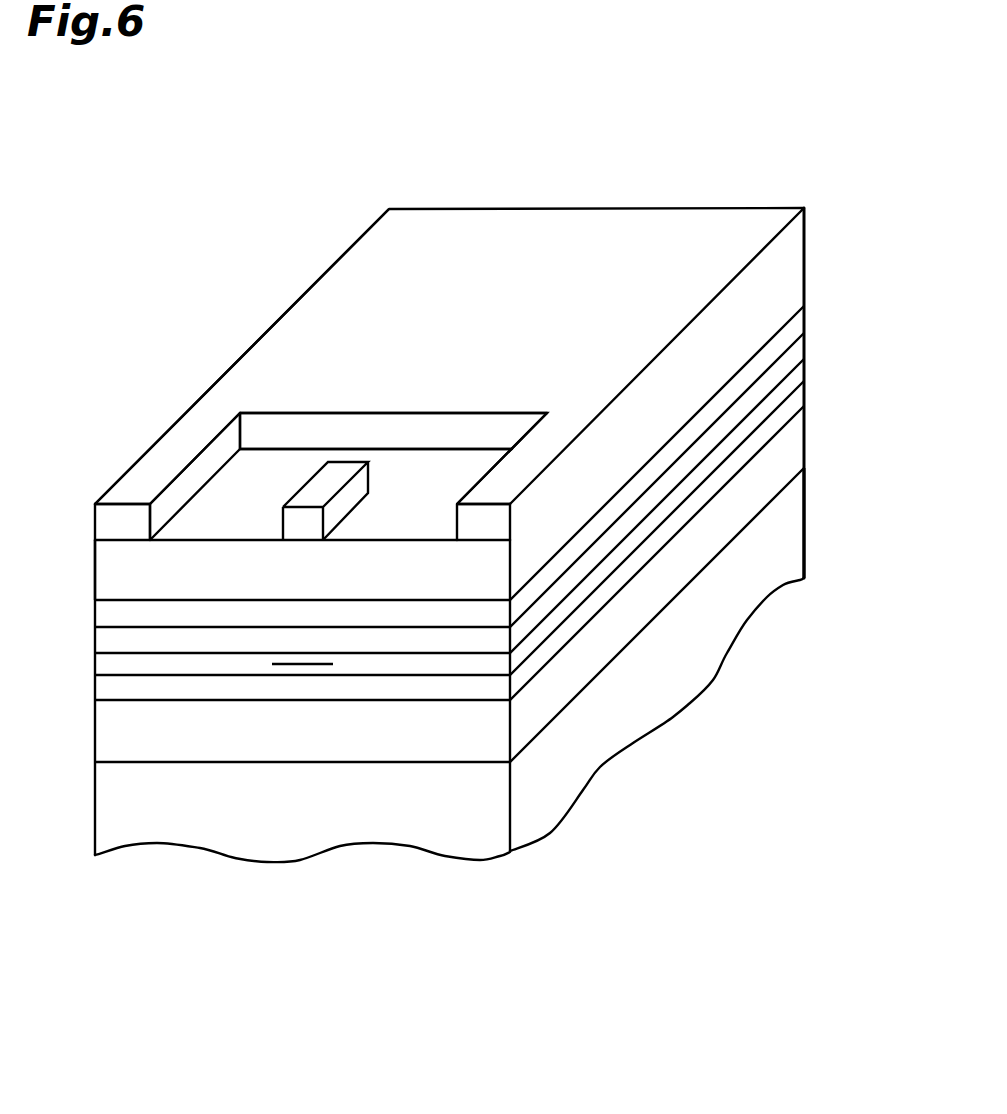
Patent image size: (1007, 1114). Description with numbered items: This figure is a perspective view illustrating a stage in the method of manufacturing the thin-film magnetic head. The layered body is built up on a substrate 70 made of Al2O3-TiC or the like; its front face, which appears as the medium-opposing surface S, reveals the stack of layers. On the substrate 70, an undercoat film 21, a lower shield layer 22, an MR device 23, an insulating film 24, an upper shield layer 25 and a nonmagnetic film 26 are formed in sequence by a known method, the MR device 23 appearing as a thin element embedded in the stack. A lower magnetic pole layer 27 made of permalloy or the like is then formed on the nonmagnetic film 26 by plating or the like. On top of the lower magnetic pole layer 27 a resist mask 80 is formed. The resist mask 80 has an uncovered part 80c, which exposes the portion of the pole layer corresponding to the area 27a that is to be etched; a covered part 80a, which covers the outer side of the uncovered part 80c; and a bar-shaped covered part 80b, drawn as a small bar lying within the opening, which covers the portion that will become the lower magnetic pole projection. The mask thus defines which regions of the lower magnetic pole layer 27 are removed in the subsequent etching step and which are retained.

The undercoat film 21 is at (795, 449).
The lower shield layer 22 is at (795, 415).
The MR device 23 is at (303, 665).
The insulating film 24 is at (795, 381).
The upper shield layer 25 is at (795, 346).
The nonmagnetic film 26 is at (795, 312).
The lower magnetic pole layer 27 is at (795, 277).
The area to be etched 27a is at (462, 458).
The substrate 70 is at (795, 533).
The resist mask 80 is at (77, 398).
The covered part 80a is at (235, 390).
The bar-shaped covered part 80b is at (297, 488).
The uncovered part 80c is at (413, 462).
The medium-opposing surface S is at (112, 564).